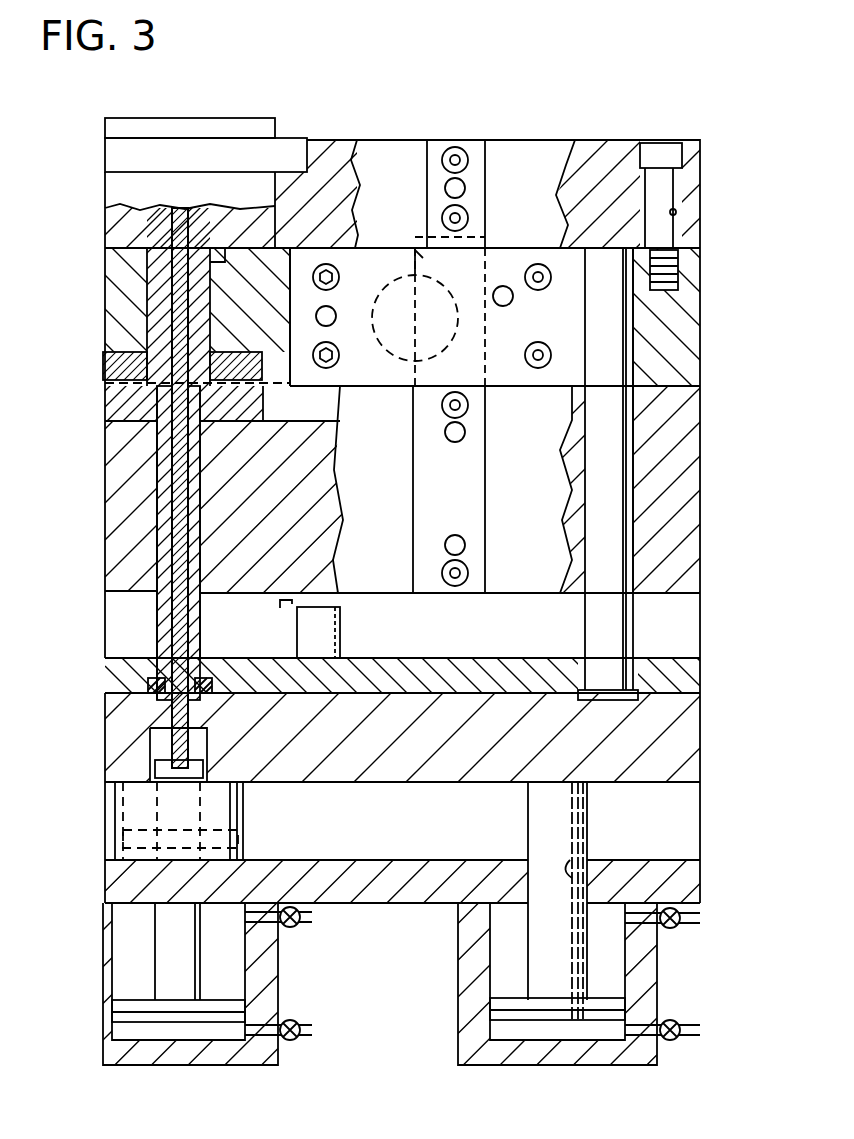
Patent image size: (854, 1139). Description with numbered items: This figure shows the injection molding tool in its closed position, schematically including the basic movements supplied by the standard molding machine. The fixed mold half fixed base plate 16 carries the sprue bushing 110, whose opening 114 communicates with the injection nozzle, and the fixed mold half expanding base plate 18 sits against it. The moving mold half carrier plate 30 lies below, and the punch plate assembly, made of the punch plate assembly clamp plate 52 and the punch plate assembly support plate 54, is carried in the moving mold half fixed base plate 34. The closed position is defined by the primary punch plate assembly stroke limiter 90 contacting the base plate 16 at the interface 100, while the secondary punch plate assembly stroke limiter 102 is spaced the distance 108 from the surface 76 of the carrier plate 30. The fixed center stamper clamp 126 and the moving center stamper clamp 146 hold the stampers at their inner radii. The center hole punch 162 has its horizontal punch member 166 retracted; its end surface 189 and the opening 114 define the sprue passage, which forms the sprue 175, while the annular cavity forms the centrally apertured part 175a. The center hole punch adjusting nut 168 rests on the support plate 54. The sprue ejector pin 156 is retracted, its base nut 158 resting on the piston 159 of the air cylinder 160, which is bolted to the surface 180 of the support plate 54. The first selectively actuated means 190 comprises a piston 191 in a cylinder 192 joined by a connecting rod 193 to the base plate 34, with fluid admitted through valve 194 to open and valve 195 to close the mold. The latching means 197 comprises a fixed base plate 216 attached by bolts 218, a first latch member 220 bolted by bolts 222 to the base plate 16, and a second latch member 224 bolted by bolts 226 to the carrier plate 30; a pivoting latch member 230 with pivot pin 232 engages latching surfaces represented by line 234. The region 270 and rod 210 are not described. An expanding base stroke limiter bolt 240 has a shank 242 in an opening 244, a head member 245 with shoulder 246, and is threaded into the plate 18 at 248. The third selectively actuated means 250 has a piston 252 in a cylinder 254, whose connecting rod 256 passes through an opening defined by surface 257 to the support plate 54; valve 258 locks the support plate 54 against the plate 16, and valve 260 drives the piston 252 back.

The fixed mold half fixed base plate 16 is at (592, 150).
The fixed mold half expanding base plate 18 is at (690, 336).
The moving mold half carrier plate 30 is at (695, 438).
The moving mold half fixed base plate 34 is at (128, 882).
The punch plate assembly clamp plate 52 is at (700, 676).
The punch plate assembly support plate 54 is at (695, 755).
The surface of the moving mold half carrier plate 76 is at (508, 600).
The primary punch plate assembly stroke limiter 90 is at (625, 633).
The interface 100 is at (597, 248).
The secondary punch plate assembly stroke limiter 102 is at (342, 643).
The distance 108 is at (267, 622).
The sprue bushing 110 is at (105, 224).
The opening of the sprue bushing 114 is at (118, 302).
The centering die locator and fixed center stamper clamp 126 is at (250, 317).
The centering punch locator and moving center stamper clamp 146 is at (254, 418).
The sprue ejector pin 156 is at (172, 604).
The sprue ejector pin base nut 158 is at (155, 769).
The piston 159 is at (150, 807).
The air cylinder 160 is at (123, 847).
The center hole punch 162 is at (130, 502).
The horizontal center hole forming punch member 166 is at (118, 442).
The center hole punch adjusting nut 168 is at (148, 685).
The sprue 175 is at (172, 256).
The centrally apertured part 175a is at (110, 390).
The surface of the assembly support plate 180 is at (365, 790).
The end surface of the punch assembly 189 is at (103, 364).
The first selectively actuated means 190 is at (187, 986).
The piston 191 is at (250, 1014).
The cylinder 192 is at (268, 980).
The connecting rod 193 is at (160, 942).
The fluid valve 194 is at (294, 929).
The fluid valve 195 is at (290, 1041).
The latching means 197 is at (514, 237).
The center rod 210 is at (572, 786).
The fixed base plate of the latching means 216 is at (560, 331).
The bolts 218 is at (320, 265).
The first latch member 220 is at (427, 185).
The bolts 222 is at (468, 160).
The second latch member 224 is at (410, 515).
The bolts 226 is at (468, 408).
The pivoting latch member 230 is at (366, 340).
The pivot pin 232 is at (410, 265).
The surface of the pivot pin 234 is at (415, 262).
The bolt 240 is at (660, 150).
The shank portion 242 is at (668, 240).
The opening 244 is at (676, 212).
The head member 245 is at (680, 158).
The shoulder 246 is at (675, 182).
The threaded engagement 248 is at (678, 270).
The third selectively actuated means 250 is at (565, 943).
The piston 252 is at (492, 1006).
The cylinder 254 is at (462, 949).
The connecting rod 256 is at (525, 828).
The surface 257 is at (575, 856).
The valve 258 is at (680, 1023).
The valve 260 is at (680, 929).
The circular region 270 is at (412, 297).